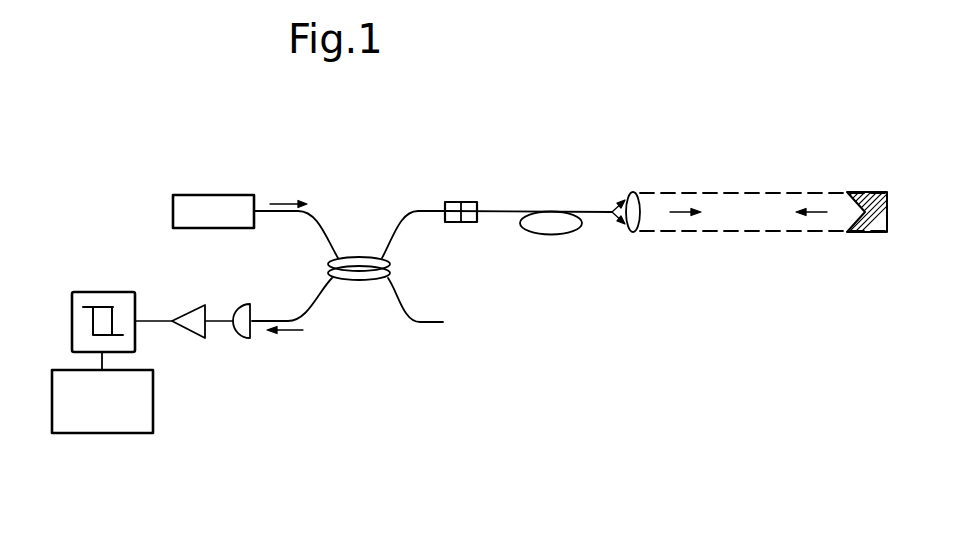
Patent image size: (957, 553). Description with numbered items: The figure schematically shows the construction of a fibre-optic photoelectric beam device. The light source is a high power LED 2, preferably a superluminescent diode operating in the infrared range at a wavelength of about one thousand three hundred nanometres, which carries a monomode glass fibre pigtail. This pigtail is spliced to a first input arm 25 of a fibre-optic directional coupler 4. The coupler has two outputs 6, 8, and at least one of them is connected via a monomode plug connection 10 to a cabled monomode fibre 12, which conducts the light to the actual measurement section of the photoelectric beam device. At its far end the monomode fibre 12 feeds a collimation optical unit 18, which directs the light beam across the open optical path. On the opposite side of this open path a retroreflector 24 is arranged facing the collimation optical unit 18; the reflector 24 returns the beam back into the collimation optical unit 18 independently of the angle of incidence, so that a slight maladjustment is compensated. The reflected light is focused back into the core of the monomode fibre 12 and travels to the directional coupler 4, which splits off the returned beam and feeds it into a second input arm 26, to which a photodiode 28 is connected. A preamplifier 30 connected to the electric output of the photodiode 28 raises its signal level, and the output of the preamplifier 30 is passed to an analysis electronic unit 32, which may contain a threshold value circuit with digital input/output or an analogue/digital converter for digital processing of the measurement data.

The high power LED 2 is at (203, 203).
The first input arm 25 is at (316, 213).
The fibre-optic directional coupler 4 is at (353, 253).
The output 6 is at (413, 212).
The monomode plug connection 10 is at (457, 198).
The monomode fibre 12 is at (522, 208).
The collimation optical unit 18 is at (633, 192).
The retroreflector 24 is at (859, 192).
The second input arm 26 is at (312, 323).
The output 8 is at (418, 323).
The photodiode 28 is at (245, 338).
The preamplifier 30 is at (193, 333).
The analysis electronic unit 32 is at (72, 446).